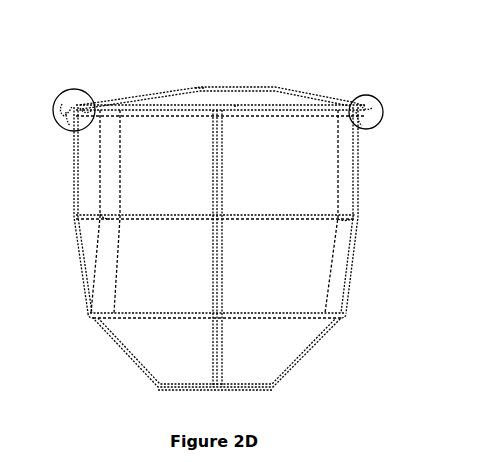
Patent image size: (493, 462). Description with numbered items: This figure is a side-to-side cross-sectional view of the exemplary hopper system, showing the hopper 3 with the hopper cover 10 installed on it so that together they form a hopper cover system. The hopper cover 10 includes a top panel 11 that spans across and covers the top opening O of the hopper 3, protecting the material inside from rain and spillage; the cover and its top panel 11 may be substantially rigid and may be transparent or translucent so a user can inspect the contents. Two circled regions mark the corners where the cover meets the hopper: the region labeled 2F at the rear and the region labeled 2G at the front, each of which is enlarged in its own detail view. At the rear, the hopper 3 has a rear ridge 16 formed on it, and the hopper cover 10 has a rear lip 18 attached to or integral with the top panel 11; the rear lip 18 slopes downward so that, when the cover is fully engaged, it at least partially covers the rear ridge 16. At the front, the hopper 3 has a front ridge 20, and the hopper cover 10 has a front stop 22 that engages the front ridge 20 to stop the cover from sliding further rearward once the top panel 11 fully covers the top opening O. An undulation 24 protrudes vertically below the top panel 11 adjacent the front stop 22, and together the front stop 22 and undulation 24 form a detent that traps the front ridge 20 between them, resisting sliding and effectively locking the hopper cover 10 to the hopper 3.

The hopper 3 is at (75, 218).
The hopper cover 10 is at (300, 96).
The top panel 11 is at (200, 88).
The opening O is at (236, 103).
The detail view 2G is at (73, 88).
The detail view 2F is at (363, 96).
The front stop 22 is at (67, 102).
The undulation 24 is at (85, 110).
The front ridge 20 is at (70, 125).
The rear lip 18 is at (366, 108).
The rear ridge 16 is at (362, 118).